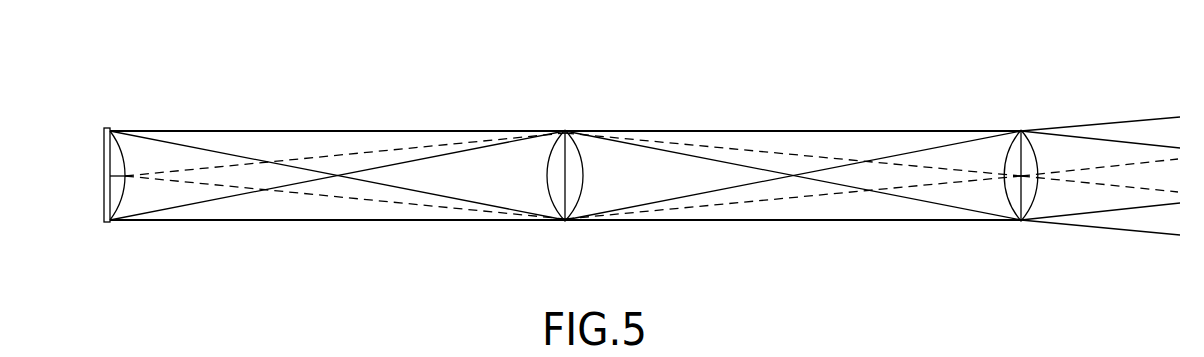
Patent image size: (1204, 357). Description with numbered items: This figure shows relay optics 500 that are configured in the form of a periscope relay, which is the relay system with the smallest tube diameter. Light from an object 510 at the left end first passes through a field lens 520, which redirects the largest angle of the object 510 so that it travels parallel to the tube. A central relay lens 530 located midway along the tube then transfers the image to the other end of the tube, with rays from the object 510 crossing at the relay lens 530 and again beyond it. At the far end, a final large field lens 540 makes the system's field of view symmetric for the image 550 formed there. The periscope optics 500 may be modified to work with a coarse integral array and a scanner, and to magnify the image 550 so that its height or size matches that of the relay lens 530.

The relay optics 500 is at (168, 63).
The object 510 is at (100, 226).
The field lens 520 is at (127, 157).
The central relay lens 530 is at (568, 128).
The final large field lens 540 is at (1002, 195).
The image 550 is at (1026, 142).